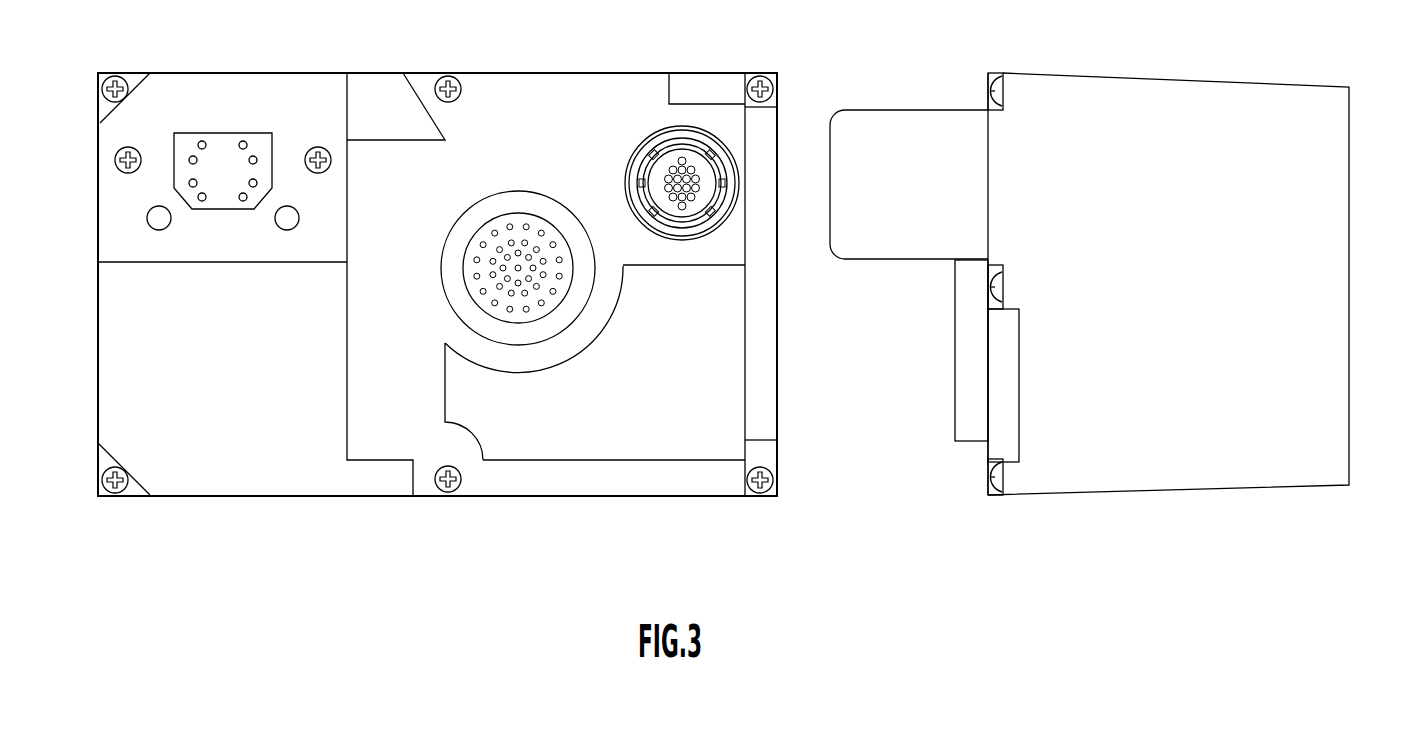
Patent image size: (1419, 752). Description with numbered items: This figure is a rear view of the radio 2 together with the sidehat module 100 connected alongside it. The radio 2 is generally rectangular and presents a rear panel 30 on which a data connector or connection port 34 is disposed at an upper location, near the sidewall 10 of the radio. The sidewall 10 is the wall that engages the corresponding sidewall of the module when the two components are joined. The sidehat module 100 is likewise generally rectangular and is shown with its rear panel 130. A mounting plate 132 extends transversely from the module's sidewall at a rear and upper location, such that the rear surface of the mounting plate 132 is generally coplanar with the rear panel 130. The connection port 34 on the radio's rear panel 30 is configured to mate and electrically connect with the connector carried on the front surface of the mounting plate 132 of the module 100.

The radio 2 is at (98, 352).
The sidewall 10 is at (777, 451).
The rear panel 30 is at (388, 414).
The connection port 34 is at (658, 177).
The sidehat module 100 is at (1349, 198).
The rear panel 130 is at (1259, 420).
The mounting plate 132 is at (917, 110).